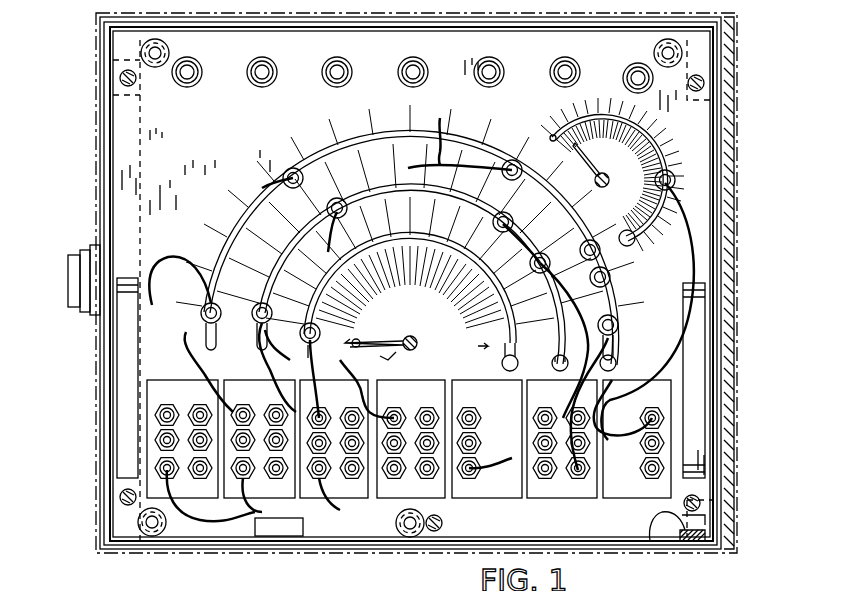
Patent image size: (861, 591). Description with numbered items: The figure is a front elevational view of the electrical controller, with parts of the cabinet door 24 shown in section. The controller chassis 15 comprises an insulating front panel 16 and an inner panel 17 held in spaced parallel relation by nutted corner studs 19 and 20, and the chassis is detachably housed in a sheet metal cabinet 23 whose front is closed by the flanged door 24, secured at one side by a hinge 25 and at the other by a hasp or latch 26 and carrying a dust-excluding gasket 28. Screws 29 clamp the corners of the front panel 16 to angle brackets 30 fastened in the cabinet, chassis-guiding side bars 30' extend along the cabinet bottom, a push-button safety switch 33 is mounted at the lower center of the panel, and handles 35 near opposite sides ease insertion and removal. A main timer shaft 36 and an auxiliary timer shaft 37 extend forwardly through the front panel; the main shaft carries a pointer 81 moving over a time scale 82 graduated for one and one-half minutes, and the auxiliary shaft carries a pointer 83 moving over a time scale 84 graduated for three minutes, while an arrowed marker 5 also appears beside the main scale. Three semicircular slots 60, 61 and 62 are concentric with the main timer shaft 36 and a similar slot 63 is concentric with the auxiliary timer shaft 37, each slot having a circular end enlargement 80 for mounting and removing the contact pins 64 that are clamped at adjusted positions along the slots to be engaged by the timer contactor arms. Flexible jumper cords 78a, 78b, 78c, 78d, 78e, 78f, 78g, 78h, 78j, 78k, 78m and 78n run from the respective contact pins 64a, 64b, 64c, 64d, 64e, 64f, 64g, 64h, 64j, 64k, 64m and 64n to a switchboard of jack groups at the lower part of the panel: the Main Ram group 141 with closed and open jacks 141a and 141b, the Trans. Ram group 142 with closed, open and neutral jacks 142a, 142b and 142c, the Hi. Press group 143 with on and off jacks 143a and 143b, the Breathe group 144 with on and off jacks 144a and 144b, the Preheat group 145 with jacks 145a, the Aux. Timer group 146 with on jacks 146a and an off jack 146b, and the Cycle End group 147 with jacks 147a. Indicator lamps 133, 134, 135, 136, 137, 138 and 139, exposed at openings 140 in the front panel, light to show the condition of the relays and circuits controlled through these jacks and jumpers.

The controller chassis 15 is at (143, 219).
The front panel 16 is at (118, 136).
The inner panel 17 is at (652, 540).
The corner stud 19 is at (142, 50).
The corner stud 20 is at (678, 526).
The sheet metal cabinet 23 is at (110, 178).
The door 24 is at (720, 18).
The hinge 25 is at (722, 258).
The hasp or latch 26 is at (70, 272).
The dust-excluding gasket 28 is at (140, 556).
The screws 29 is at (120, 80).
The angle brackets 30 is at (409, 303).
The chassis-guiding side bars 30' is at (737, 304).
The safety switch 33 is at (424, 523).
The handles 35 is at (128, 348).
The main timer shaft 36 is at (428, 352).
The auxiliary timer shaft 37 is at (606, 190).
The pointer arrow 5 is at (413, 103).
The semi-circular slot 60 is at (232, 222).
The semi-circular slot 61 is at (402, 203).
The semi-circular slot 62 is at (425, 200).
The semi-circular slot 63 is at (515, 160).
The contact pins 64 is at (293, 158).
The contact pin 64a is at (330, 327).
The contact pin 64b is at (202, 306).
The contact pin 64c is at (256, 345).
The contact pin 64d is at (282, 172).
The contact pin 64e is at (336, 198).
The contact pin 64f is at (500, 210).
The contact pin 64g is at (545, 192).
The contact pin 64h is at (668, 170).
The contact pin 64j is at (588, 240).
The contact pin 64k is at (600, 252).
The contact pin 64m is at (610, 280).
The contact pin 64n is at (615, 318).
The jumper cord 78a is at (165, 478).
The jumper cord 78b is at (188, 235).
The jumper cord 78c is at (186, 345).
The jumper cord 78d is at (309, 297).
The jumper cord 78e is at (335, 235).
The jumper cord 78f is at (401, 343).
The jumper cord 78g is at (545, 324).
The jumper cord 78h is at (700, 235).
The jumper cord 78j is at (538, 410).
The jumper cord 78k is at (280, 348).
The jumper cord 78m is at (225, 185).
The jumper cord 78n is at (623, 430).
The circular end enlargement 80 is at (612, 352).
The pointer 81 is at (350, 352).
The time scale 82 is at (500, 360).
The pointer 83 is at (582, 180).
The time scale 84 is at (553, 115).
The indicator lamp 133 is at (190, 75).
The indicator lamp 134 is at (265, 75).
The indicator lamp 135 is at (340, 75).
The indicator lamp 136 is at (416, 75).
The indicator lamp 137 is at (492, 75).
The indicator lamp 138 is at (568, 75).
The indicator lamp 139 is at (630, 82).
The openings 140 is at (200, 92).
The jack group 141 is at (150, 380).
The jacks 141a is at (160, 415).
The jacks 141b is at (185, 440).
The jack group 142 is at (259, 431).
The jacks 142a is at (237, 507).
The jacks 142b is at (308, 532).
The jacks 142c is at (271, 527).
The jack group 143 is at (334, 431).
The jacks 143a is at (321, 501).
The jacks 143b is at (368, 516).
The jack group 144 is at (411, 431).
The jacks 144a is at (394, 478).
The jacks 144b is at (427, 478).
The jack group 145 is at (487, 431).
The jacks 145a is at (469, 478).
The jack group 146 is at (562, 431).
The jacks 146a is at (545, 478).
The jack 146b is at (578, 478).
The jack group 147 is at (637, 431).
The jacks 147a is at (625, 490).